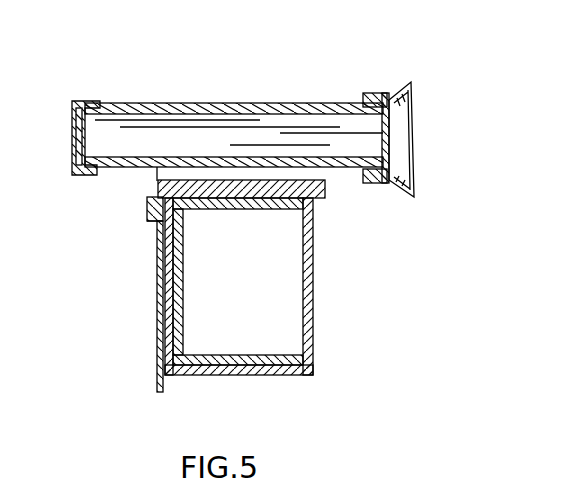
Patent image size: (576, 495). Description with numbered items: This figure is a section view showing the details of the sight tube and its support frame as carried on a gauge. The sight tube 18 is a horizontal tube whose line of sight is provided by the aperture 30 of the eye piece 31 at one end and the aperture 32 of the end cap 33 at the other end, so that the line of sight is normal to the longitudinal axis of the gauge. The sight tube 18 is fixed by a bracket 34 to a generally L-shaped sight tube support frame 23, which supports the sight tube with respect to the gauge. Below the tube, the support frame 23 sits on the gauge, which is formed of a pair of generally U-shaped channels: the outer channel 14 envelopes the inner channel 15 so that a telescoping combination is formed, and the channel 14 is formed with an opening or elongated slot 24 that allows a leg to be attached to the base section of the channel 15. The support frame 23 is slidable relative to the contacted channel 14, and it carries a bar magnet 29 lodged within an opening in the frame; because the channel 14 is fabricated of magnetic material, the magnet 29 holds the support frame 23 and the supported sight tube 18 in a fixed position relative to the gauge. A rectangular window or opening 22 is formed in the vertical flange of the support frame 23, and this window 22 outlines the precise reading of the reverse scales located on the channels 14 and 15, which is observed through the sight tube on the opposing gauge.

The channel 14 is at (308, 283).
The channel 15 is at (158, 293).
The sight tube 18 is at (262, 101).
The window 22 is at (158, 316).
The sight tube support frame 23 is at (157, 192).
The elongated slot 24 is at (158, 335).
The bar magnet 29 is at (150, 222).
The aperture 30 is at (381, 137).
The eye piece 31 is at (403, 86).
The aperture 32 is at (72, 135).
The end cap 33 is at (72, 107).
The bracket 34 is at (157, 177).